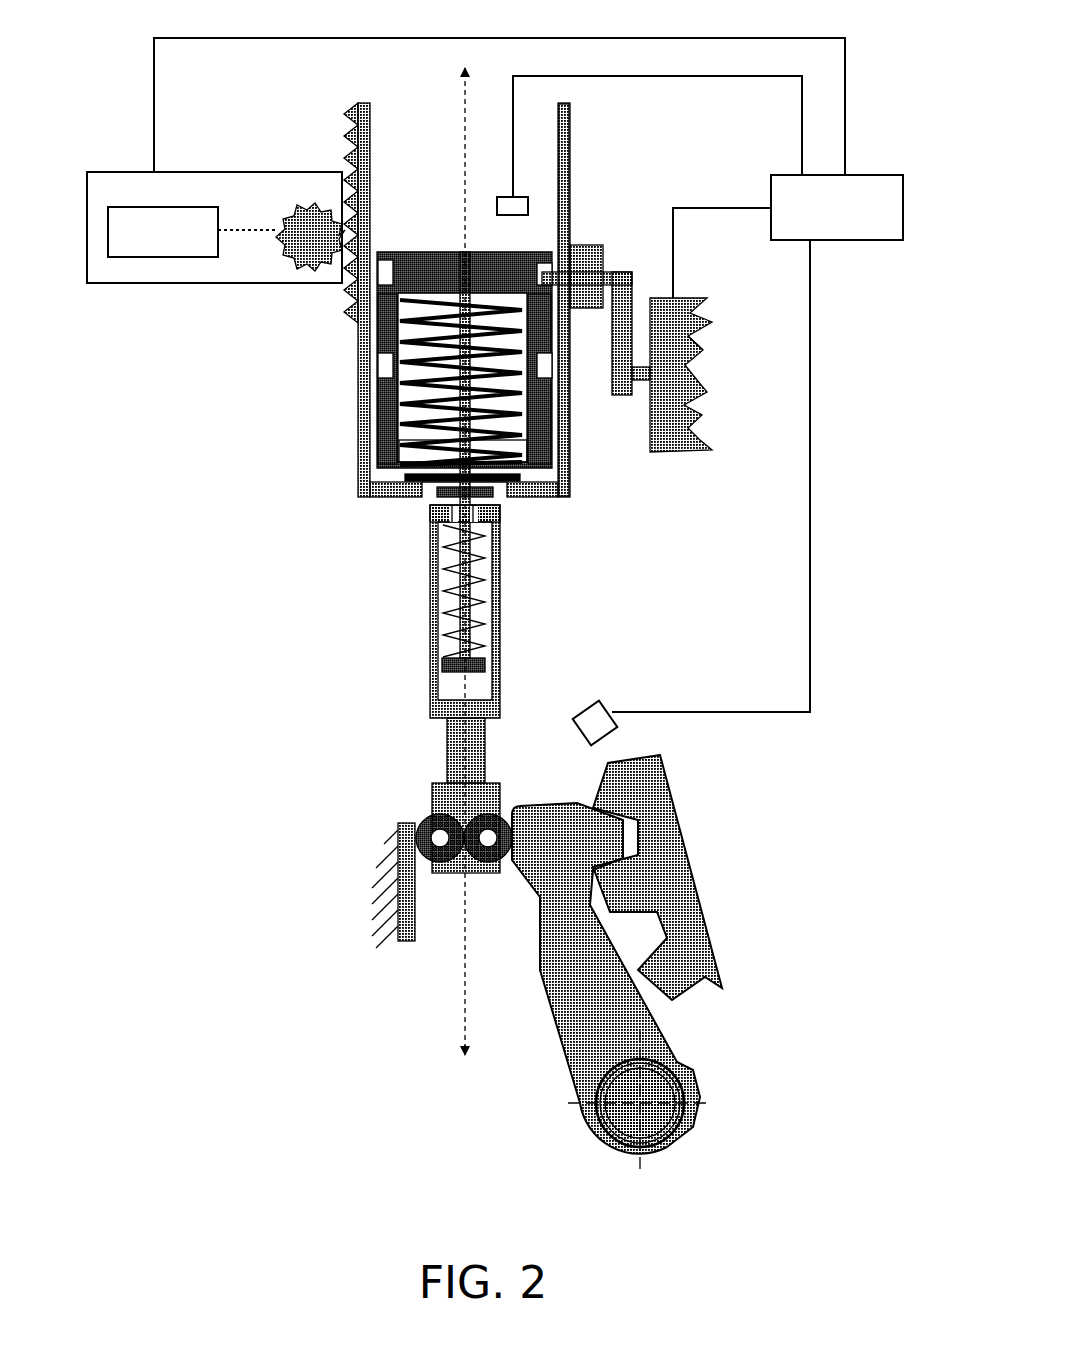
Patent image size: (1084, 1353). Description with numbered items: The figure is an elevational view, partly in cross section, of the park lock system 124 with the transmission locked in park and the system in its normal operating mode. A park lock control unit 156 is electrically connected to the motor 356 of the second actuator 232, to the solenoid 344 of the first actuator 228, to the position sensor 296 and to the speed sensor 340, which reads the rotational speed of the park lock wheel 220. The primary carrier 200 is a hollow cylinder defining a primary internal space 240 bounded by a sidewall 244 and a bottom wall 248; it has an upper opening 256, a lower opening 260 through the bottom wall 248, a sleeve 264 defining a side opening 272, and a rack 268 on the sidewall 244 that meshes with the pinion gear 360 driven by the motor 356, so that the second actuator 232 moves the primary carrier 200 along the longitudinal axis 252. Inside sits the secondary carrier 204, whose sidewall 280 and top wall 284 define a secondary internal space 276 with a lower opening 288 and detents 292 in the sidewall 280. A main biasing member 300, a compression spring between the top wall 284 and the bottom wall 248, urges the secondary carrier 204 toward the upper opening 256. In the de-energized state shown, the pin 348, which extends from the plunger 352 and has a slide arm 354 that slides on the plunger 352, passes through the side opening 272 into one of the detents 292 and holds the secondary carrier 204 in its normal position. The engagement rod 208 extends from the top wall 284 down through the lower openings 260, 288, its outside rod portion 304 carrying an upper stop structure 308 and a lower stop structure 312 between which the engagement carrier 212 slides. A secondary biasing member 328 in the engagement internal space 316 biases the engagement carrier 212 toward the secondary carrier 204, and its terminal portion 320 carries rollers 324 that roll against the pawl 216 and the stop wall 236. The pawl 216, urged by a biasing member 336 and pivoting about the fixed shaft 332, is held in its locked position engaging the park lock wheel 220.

The park lock system 124 is at (897, 93).
The park lock control unit 156 is at (868, 172).
The primary carrier 200 is at (388, 125).
The secondary carrier 204 is at (405, 442).
The engagement rod 208 is at (405, 482).
The engagement carrier 212 is at (482, 740).
The pawl 216 is at (550, 990).
The park lock wheel 220 is at (683, 892).
The first actuator 228 is at (651, 467).
The second actuator 232 is at (127, 170).
The stop wall 236 is at (408, 940).
The primary internal space 240 is at (441, 124).
The sidewall 244 is at (572, 152).
The bottom wall 248 is at (380, 503).
The longitudinal axis 252 is at (465, 968).
The upper opening 256 is at (490, 100).
The lower opening 260 is at (427, 500).
The sleeve 264 is at (591, 243).
The rack 268 is at (356, 108).
The side opening 272 is at (597, 266).
The secondary internal space 276 is at (412, 408).
The sidewall 280 is at (382, 330).
The top wall 284 is at (388, 255).
The lower opening 288 is at (510, 488).
The detents 292 is at (546, 262).
The position sensor 296 is at (529, 206).
The main biasing member 300 is at (515, 433).
The outside rod portion 304 is at (455, 603).
The upper stop structure 308 is at (442, 512).
The lower stop structure 312 is at (448, 672).
The engagement internal space 316 is at (482, 622).
The terminal portion 320 is at (440, 787).
The rollers 324 is at (479, 826).
The secondary biasing member 328 is at (480, 568).
The fixed shaft 332 is at (623, 1110).
The biasing member 336 is at (666, 1080).
The speed sensor 340 is at (588, 708).
The solenoid 344 is at (698, 434).
The pin 348 is at (632, 296).
The plunger 352 is at (653, 358).
The slide arm 354 is at (614, 356).
The motor 356 is at (205, 258).
The pinion gear 360 is at (292, 200).